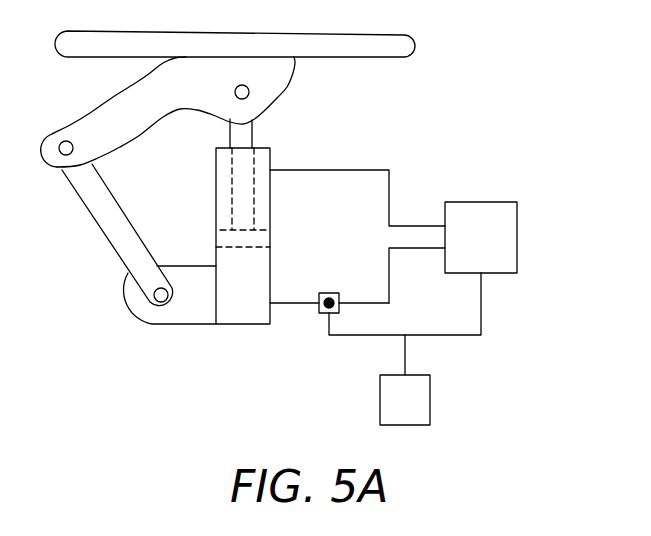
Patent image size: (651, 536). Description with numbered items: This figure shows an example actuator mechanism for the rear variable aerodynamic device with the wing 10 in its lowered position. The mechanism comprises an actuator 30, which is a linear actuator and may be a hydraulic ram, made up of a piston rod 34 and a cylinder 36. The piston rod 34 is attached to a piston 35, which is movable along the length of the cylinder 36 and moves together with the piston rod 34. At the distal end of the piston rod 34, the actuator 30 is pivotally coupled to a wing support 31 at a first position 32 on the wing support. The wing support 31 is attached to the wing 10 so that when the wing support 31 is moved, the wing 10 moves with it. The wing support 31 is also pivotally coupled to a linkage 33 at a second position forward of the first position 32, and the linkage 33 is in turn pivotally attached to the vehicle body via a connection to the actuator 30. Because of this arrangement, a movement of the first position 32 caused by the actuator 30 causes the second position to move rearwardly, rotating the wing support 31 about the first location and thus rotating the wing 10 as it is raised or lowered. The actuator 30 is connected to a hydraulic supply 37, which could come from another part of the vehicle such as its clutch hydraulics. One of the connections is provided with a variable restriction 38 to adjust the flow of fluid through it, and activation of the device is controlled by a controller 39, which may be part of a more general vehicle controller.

The wing 10 is at (419, 46).
The actuator 30 is at (258, 327).
The wing support 31 is at (133, 130).
The first position 32 is at (248, 97).
The linkage 33 is at (100, 208).
The piston rod 34 is at (254, 135).
The piston 35 is at (276, 232).
The cylinder 36 is at (233, 308).
The hydraulic supply 37 is at (517, 213).
The variable restriction 38 is at (330, 292).
The controller 39 is at (430, 386).